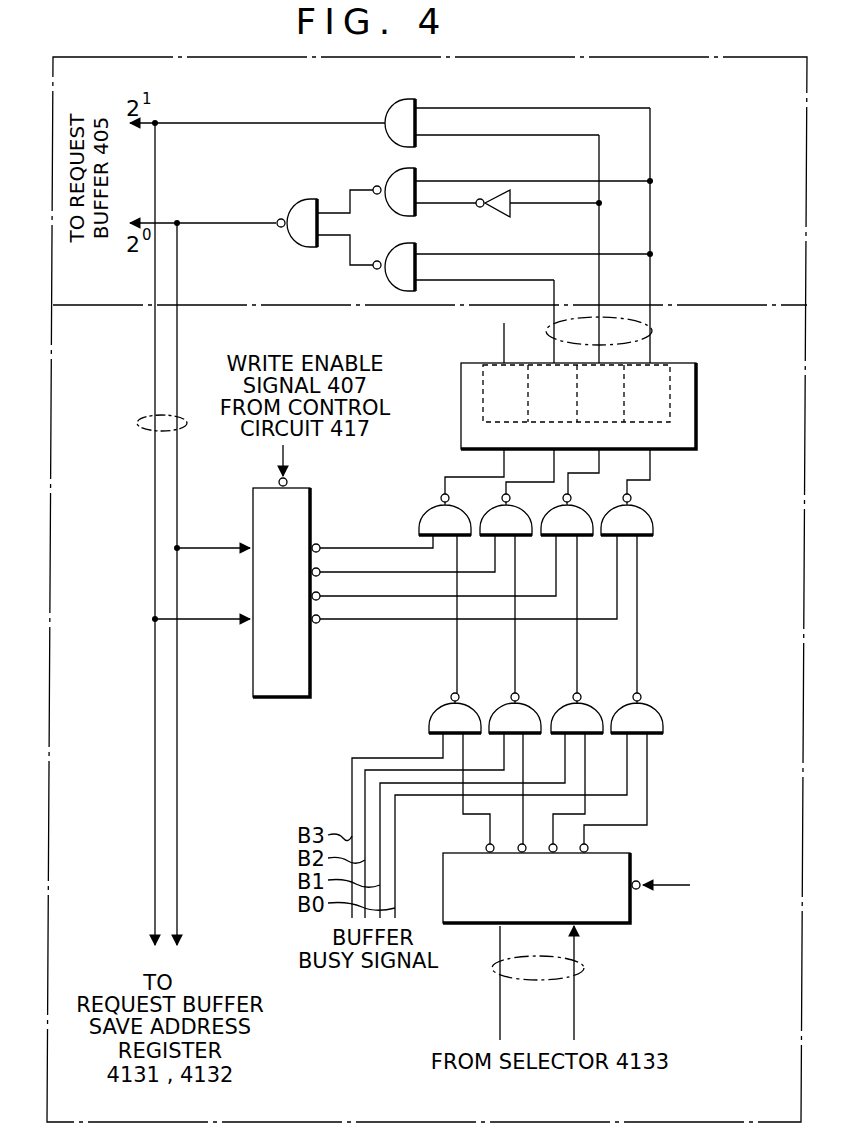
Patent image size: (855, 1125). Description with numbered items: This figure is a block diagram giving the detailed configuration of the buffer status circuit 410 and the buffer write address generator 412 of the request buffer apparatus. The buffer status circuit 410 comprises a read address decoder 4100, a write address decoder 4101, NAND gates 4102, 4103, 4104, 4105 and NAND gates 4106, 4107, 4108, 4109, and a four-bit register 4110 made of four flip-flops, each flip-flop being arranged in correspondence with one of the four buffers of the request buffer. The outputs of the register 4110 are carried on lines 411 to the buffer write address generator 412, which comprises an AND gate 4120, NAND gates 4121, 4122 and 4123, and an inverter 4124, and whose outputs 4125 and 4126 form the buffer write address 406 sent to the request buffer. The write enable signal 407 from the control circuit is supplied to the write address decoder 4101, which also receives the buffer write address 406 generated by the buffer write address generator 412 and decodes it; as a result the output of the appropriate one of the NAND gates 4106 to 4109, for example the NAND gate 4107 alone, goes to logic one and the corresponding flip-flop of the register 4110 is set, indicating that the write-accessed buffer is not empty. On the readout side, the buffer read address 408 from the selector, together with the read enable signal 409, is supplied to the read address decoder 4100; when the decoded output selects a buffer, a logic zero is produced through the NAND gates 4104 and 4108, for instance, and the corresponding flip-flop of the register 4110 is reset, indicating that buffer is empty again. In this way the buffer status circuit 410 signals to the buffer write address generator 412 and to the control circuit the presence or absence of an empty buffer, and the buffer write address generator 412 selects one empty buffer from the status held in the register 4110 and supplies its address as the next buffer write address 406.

The buffer write address generator 412 is at (706, 108).
The buffer status circuit 410 is at (262, 338).
The register output signal lines 411 is at (653, 331).
The buffer write address 406 is at (140, 423).
The write enable signal 407 is at (287, 455).
The buffer read address 408 is at (493, 976).
The read enable signal 409 is at (690, 958).
The read address decoder 4100 is at (634, 860).
The write address decoder 4101 is at (283, 699).
The NAND gate 4102 is at (470, 704).
The NAND gate 4103 is at (530, 704).
The NAND gate 4104 is at (592, 704).
The NAND gate 4105 is at (654, 704).
The NAND gate 4106 is at (426, 516).
The NAND gate 4107 is at (492, 508).
The NAND gate 4108 is at (582, 506).
The NAND gate 4109 is at (647, 508).
The register 4110 is at (697, 405).
The AND gate 4120 is at (418, 100).
The NAND gate 4121 is at (302, 201).
The NAND gate 4122 is at (418, 168).
The NAND gate 4123 is at (418, 245).
The inverter 4124 is at (508, 214).
The output signal line 2^0 4125 is at (228, 225).
The output signal line 2^1 4126 is at (218, 122).